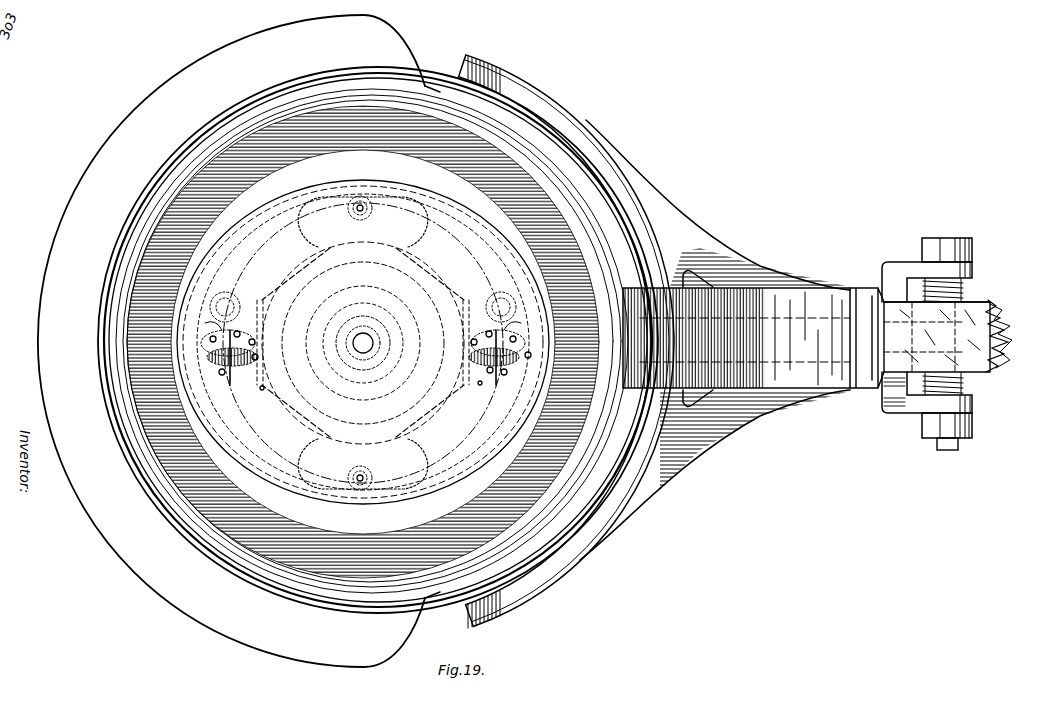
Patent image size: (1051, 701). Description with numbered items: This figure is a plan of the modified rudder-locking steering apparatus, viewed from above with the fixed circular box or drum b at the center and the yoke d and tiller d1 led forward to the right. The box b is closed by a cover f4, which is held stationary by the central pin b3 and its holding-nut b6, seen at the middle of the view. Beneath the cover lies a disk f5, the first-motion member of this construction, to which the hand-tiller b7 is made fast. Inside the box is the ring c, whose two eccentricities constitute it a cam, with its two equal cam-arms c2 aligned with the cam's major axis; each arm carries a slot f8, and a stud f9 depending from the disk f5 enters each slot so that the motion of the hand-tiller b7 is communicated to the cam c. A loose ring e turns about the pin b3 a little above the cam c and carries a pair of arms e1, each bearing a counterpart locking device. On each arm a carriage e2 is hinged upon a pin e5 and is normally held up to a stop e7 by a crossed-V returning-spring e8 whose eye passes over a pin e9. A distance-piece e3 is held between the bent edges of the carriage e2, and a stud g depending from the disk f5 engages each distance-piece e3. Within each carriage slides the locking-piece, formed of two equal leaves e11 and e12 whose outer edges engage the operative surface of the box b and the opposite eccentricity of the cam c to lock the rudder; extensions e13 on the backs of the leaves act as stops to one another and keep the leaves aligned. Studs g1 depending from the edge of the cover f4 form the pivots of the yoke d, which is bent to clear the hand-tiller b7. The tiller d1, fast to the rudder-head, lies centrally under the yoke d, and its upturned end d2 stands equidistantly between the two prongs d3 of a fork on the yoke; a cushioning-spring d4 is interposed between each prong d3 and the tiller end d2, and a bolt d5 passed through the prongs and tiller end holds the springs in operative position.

The fixed circular box or drum b is at (147, 305).
The central pin b3 is at (366, 352).
The holding-nut b6 is at (381, 350).
The hand-tiller b7 is at (990, 308).
The cam c is at (290, 412).
The cam-arms c2 is at (296, 215).
The yoke d is at (712, 420).
The tiller d1 is at (752, 370).
The tiller end d2 is at (1008, 344).
The prongs of fork d3 is at (972, 270).
The cushioning-spring d4 is at (963, 290).
The bolt d5 is at (948, 450).
The loose ring e is at (292, 278).
The arms e1 is at (262, 389).
The carriage e2 is at (208, 322).
The distance-piece e3 is at (238, 333).
The pin e5 is at (256, 357).
The stop e7 is at (529, 355).
The returning-spring e8 is at (364, 381).
The pin e9 is at (490, 374).
The leaf of locking-piece e11 is at (210, 338).
The leaf of locking-piece e12 is at (253, 342).
The extensions e13 is at (363, 364).
The cover f4 is at (428, 87).
The disk f5 is at (268, 200).
The slots f8 is at (373, 207).
The studs f9 is at (358, 214).
The studs g is at (232, 290).
The studs g1 is at (482, 68).